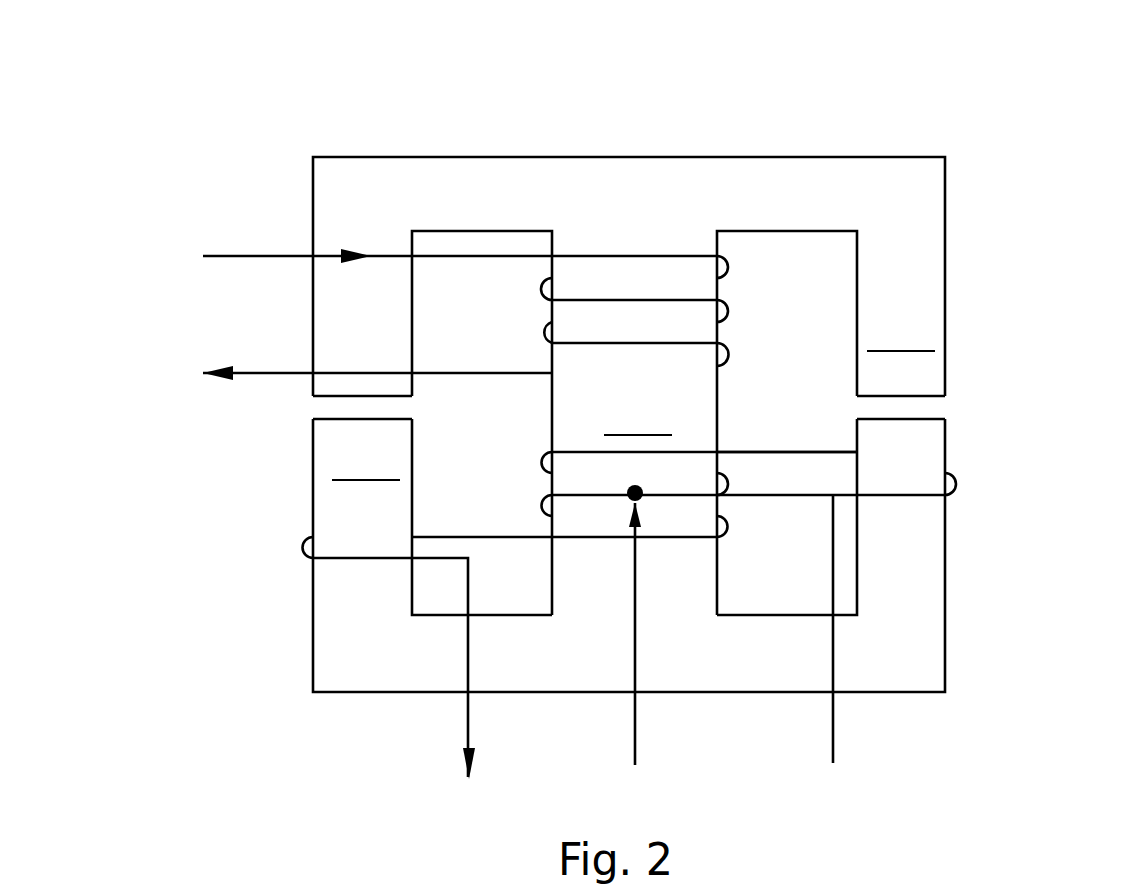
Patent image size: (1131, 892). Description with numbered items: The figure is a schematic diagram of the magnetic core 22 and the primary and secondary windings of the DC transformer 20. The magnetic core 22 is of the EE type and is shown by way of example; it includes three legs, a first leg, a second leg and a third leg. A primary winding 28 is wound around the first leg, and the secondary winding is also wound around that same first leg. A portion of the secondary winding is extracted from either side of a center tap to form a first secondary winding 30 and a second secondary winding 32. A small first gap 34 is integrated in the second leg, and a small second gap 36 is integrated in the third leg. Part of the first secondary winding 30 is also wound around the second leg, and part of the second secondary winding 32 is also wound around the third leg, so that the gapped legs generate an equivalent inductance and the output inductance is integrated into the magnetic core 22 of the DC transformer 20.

The DC transformer 20 is at (986, 130).
The magnetic core 22 is at (457, 157).
The primary winding 28 is at (218, 254).
The first secondary winding 30 is at (470, 718).
The second secondary winding 32 is at (834, 742).
The first gap 34 is at (312, 407).
The second gap 36 is at (952, 412).